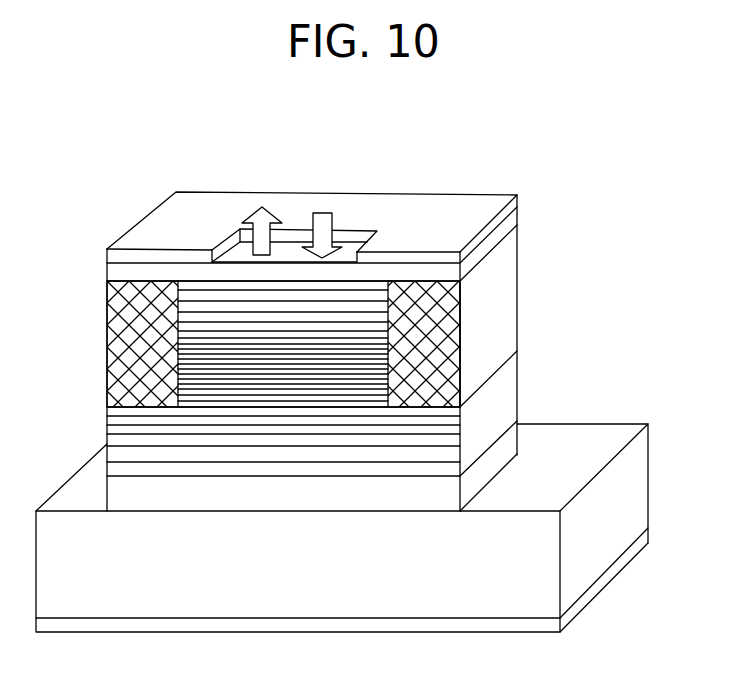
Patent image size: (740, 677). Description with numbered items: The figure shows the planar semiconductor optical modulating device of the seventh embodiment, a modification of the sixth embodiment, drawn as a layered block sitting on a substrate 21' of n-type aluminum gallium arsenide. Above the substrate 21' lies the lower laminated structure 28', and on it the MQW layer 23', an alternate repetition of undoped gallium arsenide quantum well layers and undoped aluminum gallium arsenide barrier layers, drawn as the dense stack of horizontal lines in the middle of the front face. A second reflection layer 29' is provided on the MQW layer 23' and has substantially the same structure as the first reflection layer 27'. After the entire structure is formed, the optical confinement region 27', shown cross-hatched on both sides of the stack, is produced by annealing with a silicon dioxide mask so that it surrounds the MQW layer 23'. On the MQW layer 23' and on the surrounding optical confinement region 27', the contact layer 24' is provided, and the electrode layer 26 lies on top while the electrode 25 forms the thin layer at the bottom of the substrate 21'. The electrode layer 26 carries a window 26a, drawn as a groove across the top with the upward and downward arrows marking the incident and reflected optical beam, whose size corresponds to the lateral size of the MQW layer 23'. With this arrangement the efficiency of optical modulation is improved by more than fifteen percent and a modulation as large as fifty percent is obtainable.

The electrode layer 26 is at (460, 262).
The window 26a is at (345, 250).
The contact layer 24' is at (351, 244).
The second reflection layer 29' is at (526, 315).
The MQW layer 23' is at (387, 344).
The optical confinement region 27' is at (351, 344).
The lower laminated layer 28' is at (351, 413).
The substrate 21' is at (378, 528).
The electrode 25 is at (552, 628).